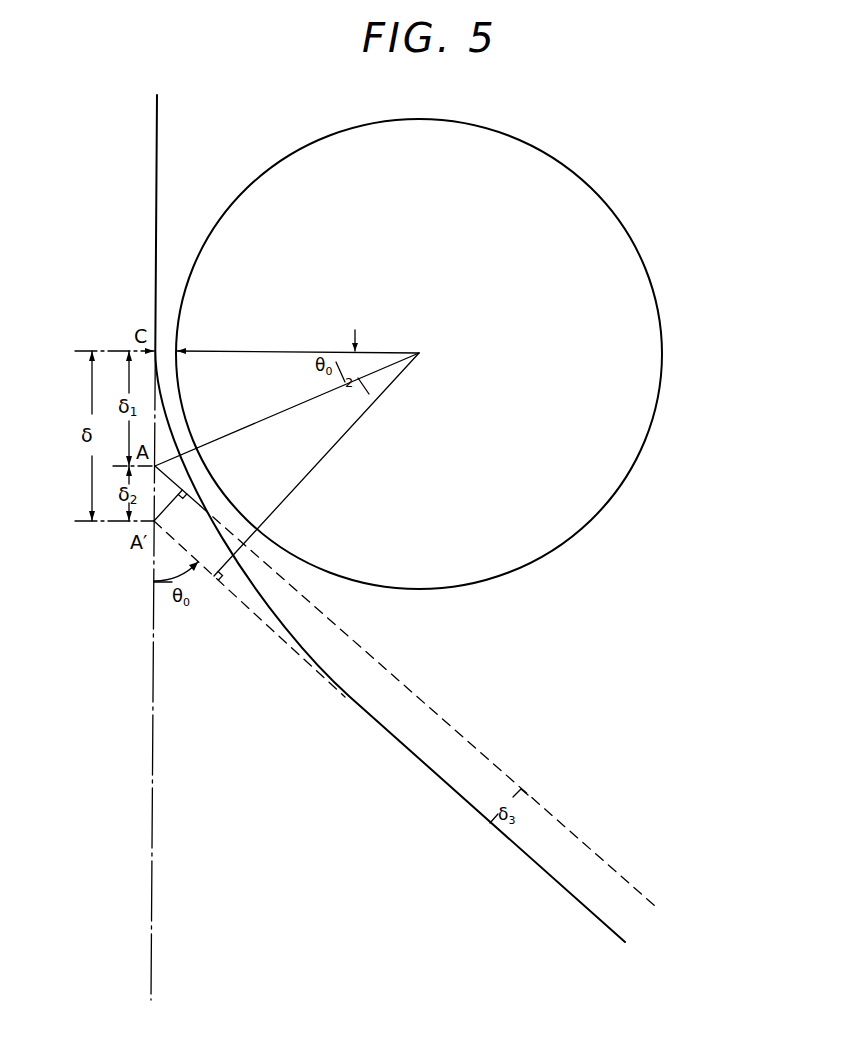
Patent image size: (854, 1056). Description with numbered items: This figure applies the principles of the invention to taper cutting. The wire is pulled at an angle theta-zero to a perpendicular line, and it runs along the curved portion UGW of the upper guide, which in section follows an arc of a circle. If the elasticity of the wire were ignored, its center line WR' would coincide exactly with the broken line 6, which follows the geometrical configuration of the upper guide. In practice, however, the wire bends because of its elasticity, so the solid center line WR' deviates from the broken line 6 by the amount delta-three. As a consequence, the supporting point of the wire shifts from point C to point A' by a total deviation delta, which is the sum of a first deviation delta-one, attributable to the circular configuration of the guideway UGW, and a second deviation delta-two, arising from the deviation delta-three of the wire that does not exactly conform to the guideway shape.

The broken line 6 is at (588, 845).
The center line of the wire WR' is at (390, 526).
The curved portion of the upper guide UGW is at (637, 263).